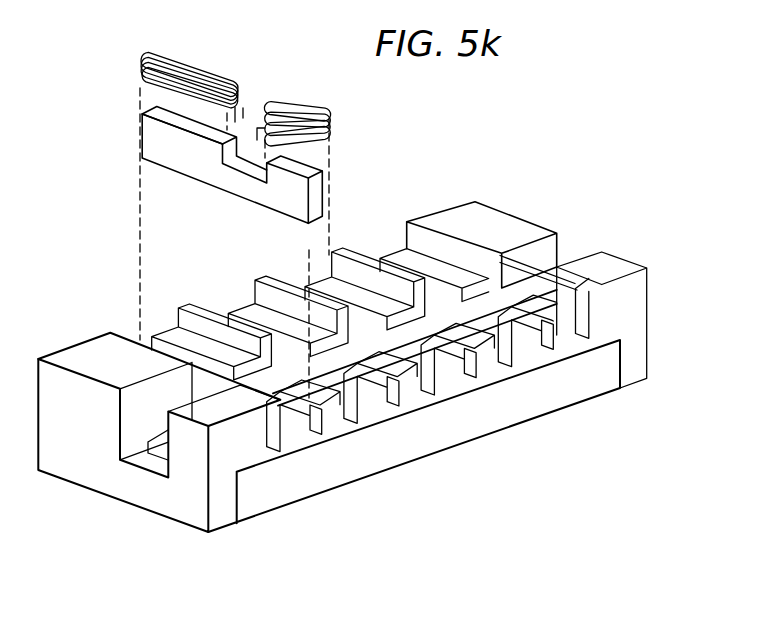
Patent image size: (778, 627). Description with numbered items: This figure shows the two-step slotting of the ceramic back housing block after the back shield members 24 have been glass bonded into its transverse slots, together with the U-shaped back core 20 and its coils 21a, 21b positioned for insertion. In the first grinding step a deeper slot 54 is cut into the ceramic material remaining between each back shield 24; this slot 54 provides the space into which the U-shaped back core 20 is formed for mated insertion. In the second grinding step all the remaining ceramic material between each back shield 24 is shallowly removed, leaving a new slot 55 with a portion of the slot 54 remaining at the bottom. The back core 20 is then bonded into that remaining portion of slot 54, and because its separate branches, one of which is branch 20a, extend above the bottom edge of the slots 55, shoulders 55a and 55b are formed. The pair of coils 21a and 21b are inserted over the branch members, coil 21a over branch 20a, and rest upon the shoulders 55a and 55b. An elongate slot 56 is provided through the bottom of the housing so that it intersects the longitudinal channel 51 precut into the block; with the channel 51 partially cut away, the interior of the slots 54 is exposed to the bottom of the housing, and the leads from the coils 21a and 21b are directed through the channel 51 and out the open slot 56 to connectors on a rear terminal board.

The core member 20 is at (192, 165).
The branch 20a is at (159, 136).
The coil 21a is at (140, 58).
The coil 21b is at (331, 117).
The back shield member 24 is at (127, 345).
The longitudinal channel 51 is at (504, 296).
The slot 54 is at (462, 363).
The slot 55 is at (514, 340).
The shoulder 55a is at (288, 410).
The shoulder 55b is at (327, 396).
The elongate slot 56 is at (620, 388).